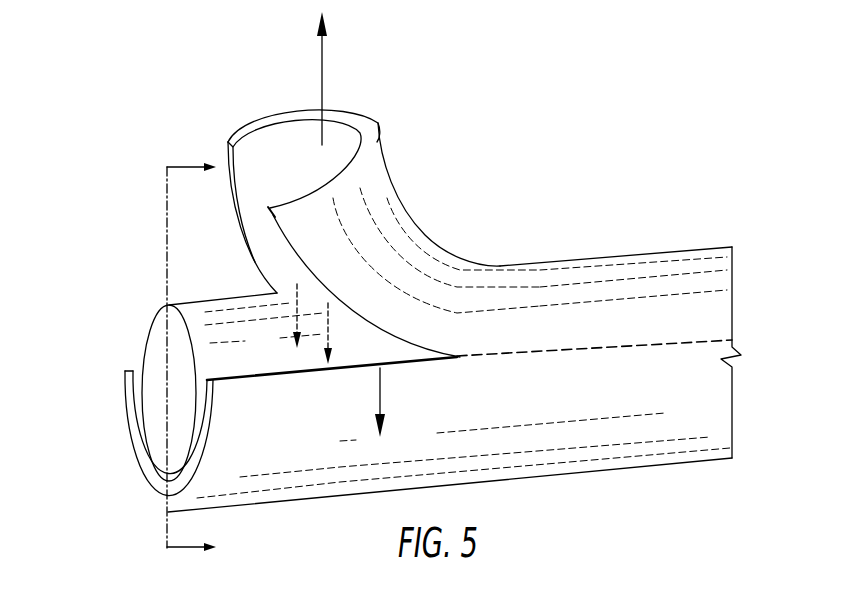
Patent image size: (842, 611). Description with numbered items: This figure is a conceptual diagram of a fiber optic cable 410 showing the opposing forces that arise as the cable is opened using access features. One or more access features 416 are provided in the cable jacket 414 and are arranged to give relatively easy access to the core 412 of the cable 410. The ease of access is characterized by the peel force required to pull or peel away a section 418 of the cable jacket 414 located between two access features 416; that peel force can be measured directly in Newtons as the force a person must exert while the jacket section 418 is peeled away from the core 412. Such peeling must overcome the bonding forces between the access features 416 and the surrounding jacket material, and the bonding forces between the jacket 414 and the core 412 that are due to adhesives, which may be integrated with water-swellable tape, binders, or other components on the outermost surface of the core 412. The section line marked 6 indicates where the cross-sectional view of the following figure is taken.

The cable 410 is at (138, 88).
The core 412 is at (180, 362).
The cable jacket 414 is at (663, 270).
The access feature 416 is at (580, 345).
The section of the cable jacket 418 is at (337, 223).
The section line 6- 6 is at (191, 353).